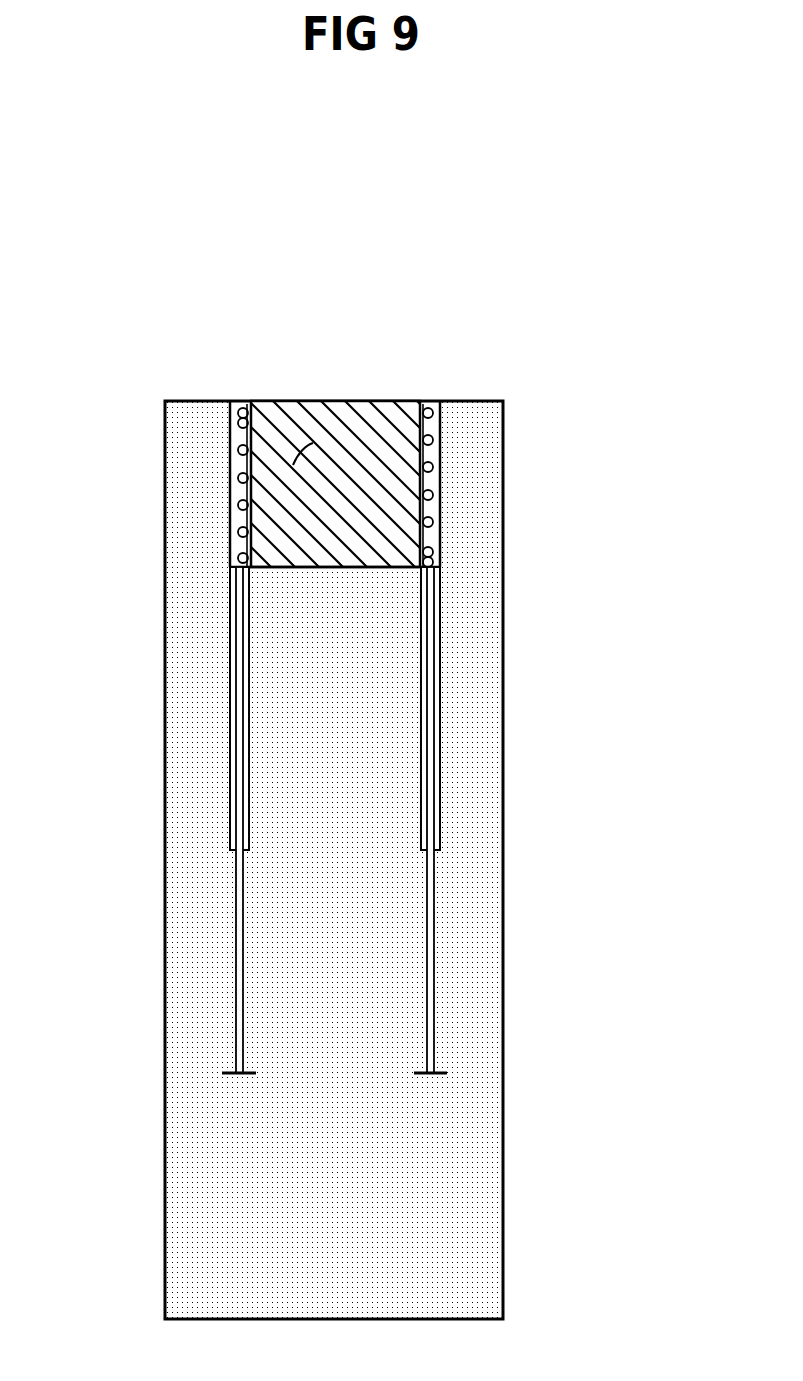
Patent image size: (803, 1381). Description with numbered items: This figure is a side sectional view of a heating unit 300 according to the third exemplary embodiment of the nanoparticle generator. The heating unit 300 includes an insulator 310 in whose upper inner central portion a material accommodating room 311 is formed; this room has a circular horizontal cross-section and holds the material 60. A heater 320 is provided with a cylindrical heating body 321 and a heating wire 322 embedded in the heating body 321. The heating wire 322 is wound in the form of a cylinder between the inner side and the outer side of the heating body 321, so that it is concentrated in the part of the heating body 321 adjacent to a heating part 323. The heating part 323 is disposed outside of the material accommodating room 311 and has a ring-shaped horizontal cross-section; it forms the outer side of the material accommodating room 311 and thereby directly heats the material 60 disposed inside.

The heating unit 300 is at (584, 430).
The insulator 310 is at (205, 793).
The material accommodating room 311 is at (290, 444).
The heater 320 is at (478, 674).
The heating body 321 is at (230, 670).
The heating wire 322 is at (432, 922).
The heating part 323 is at (245, 513).
The material 60 is at (370, 444).